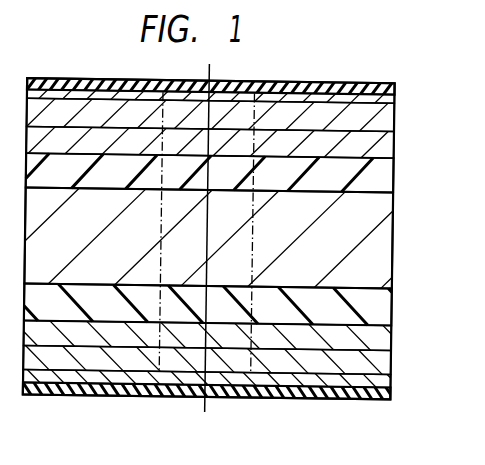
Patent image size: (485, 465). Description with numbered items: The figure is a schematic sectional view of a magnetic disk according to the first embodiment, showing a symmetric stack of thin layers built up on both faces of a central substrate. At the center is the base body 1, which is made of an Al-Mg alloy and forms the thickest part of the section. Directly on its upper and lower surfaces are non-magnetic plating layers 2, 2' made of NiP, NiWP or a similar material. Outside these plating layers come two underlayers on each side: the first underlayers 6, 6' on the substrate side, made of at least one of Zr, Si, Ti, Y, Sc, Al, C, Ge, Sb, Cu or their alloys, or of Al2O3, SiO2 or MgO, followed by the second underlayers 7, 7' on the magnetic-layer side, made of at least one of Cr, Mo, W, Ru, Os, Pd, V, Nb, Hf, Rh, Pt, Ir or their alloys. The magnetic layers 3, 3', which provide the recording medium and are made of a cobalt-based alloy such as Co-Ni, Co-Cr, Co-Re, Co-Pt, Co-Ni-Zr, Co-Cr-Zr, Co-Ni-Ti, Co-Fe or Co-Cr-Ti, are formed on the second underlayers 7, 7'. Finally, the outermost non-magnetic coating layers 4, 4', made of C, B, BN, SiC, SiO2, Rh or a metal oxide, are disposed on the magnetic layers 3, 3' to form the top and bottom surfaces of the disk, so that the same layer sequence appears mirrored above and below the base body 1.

The base body 1 is at (385, 232).
The non-magnetic plating layer 2 is at (237, 173).
The non-magnetic plating layer 2' is at (238, 304).
The magnetic layer 3 is at (237, 95).
The magnetic layer 3' is at (238, 390).
The non-magnetic coating layer 4 is at (231, 74).
The non-magnetic coating layer 4' is at (231, 409).
The first underlayer 6 is at (237, 145).
The first underlayer 6' is at (239, 336).
The second underlayer 7 is at (237, 116).
The second underlayer 7' is at (238, 365).